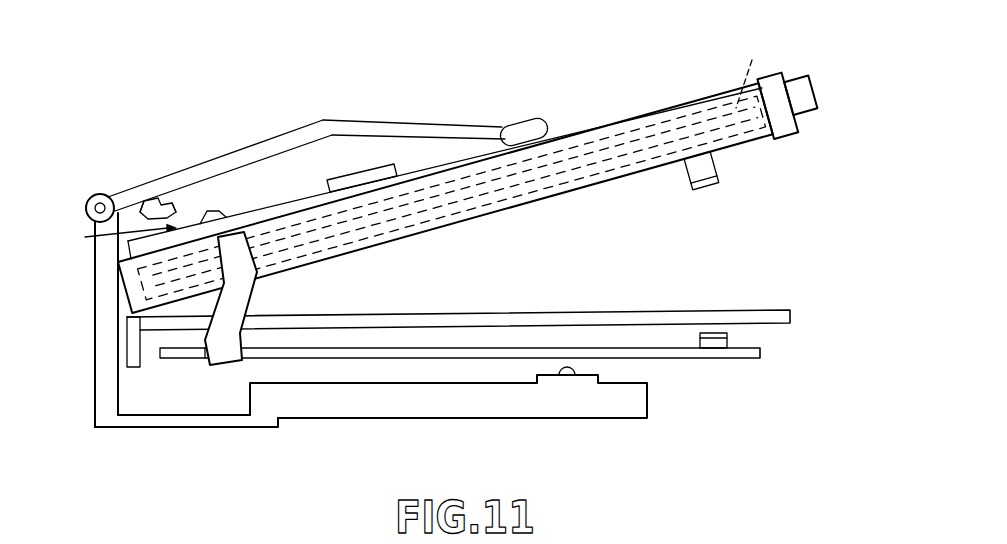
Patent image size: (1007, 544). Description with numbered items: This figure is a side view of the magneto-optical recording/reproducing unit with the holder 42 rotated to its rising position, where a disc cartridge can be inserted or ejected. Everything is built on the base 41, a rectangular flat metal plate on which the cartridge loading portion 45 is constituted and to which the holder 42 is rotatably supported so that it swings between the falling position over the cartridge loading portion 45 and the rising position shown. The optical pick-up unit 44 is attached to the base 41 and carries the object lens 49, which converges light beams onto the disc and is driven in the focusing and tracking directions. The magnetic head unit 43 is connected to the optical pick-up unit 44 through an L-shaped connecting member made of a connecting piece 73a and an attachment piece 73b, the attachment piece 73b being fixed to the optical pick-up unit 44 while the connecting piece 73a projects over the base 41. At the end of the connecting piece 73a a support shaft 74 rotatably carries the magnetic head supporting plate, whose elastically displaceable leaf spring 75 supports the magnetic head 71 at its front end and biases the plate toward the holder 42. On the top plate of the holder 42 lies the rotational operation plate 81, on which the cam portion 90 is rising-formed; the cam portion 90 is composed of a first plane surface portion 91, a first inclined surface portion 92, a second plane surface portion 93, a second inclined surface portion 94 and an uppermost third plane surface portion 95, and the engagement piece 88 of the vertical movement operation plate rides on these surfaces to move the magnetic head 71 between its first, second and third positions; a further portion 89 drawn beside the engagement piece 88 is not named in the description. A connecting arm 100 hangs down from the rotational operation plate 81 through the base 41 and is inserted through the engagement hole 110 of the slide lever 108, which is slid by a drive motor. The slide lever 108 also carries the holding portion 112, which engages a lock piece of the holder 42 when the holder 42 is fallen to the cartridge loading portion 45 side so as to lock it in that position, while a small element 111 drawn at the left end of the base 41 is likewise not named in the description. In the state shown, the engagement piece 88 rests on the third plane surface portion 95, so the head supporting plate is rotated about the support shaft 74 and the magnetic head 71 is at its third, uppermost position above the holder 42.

The base 41 is at (787, 310).
The holder 42 is at (473, 190).
The magnetic head unit 43 is at (231, 146).
The optical pick-up unit 44 is at (377, 412).
The cartridge loading portion 45 is at (437, 326).
The object lens 49 is at (567, 376).
The magnetic head 71 is at (535, 124).
The connecting piece 73a is at (97, 283).
The attachment piece 73b is at (178, 428).
The support shaft 74 is at (93, 203).
The leaf spring 75 is at (405, 128).
The rotational operation plate 81 is at (346, 185).
The engagement piece 88 is at (163, 200).
The latch portion 89 is at (147, 203).
The cam portion 90 is at (150, 193).
The first plane surface portion 91 is at (278, 205).
The first inclined surface portion 92 is at (224, 213).
The second plane surface portion 93 is at (203, 200).
The second inclined surface portion 94 is at (178, 202).
The third plane surface portion 95 is at (130, 234).
The connecting arm 100 is at (249, 302).
The slide lever 108 is at (373, 352).
The engagement hole 110 is at (204, 358).
The hook 111 is at (165, 330).
The holding portion 112 is at (727, 340).